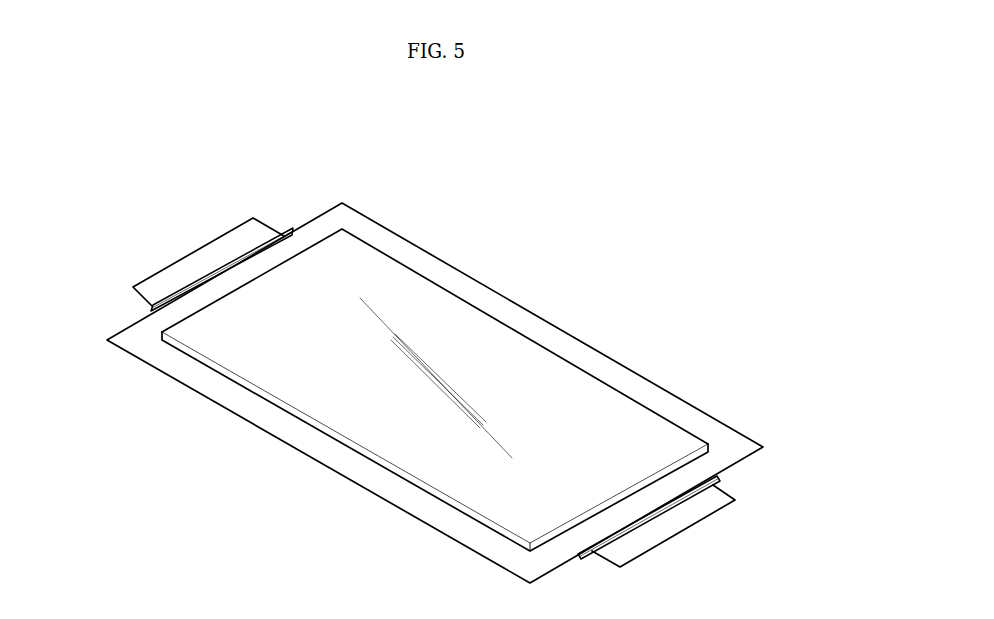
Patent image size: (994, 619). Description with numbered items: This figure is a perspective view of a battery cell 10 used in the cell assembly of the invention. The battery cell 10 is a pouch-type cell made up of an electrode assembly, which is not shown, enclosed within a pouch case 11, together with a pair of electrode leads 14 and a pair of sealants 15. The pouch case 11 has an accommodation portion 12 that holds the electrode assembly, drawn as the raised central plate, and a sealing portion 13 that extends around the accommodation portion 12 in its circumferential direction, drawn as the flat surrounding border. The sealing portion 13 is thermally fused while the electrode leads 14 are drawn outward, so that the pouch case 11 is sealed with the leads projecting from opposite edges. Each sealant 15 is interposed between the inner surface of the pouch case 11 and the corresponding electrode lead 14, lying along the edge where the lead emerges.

The battery cell 10 is at (376, 154).
The pouch case 11 is at (482, 211).
The accommodation portion 12 is at (415, 283).
The sealing portion 13 is at (487, 295).
The electrode lead 14 is at (230, 240).
The sealant 15 is at (282, 230).